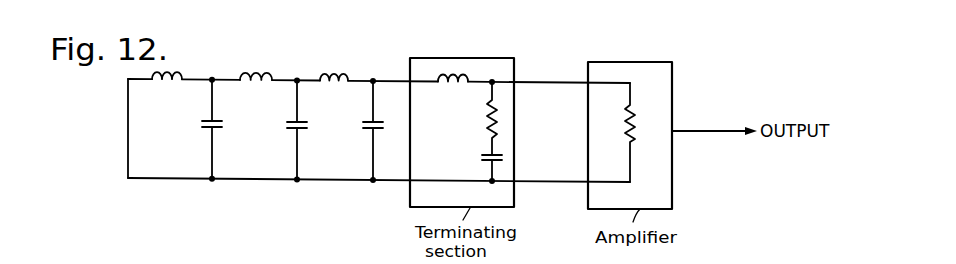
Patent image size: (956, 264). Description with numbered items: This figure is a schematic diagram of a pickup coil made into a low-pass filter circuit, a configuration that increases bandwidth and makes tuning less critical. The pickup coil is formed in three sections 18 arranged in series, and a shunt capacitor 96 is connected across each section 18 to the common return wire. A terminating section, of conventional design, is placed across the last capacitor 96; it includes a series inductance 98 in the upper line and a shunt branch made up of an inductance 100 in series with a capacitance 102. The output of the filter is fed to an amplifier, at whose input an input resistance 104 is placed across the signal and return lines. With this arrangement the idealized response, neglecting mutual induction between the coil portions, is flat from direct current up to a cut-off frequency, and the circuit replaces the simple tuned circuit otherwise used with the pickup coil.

The pickup coil section 18 is at (175, 85).
The shunt capacitor 96 is at (362, 131).
The series inductance 98 is at (457, 88).
The shunt inductance 100 is at (495, 120).
The shunt capacitance 102 is at (498, 158).
The input resistance 104 is at (634, 137).